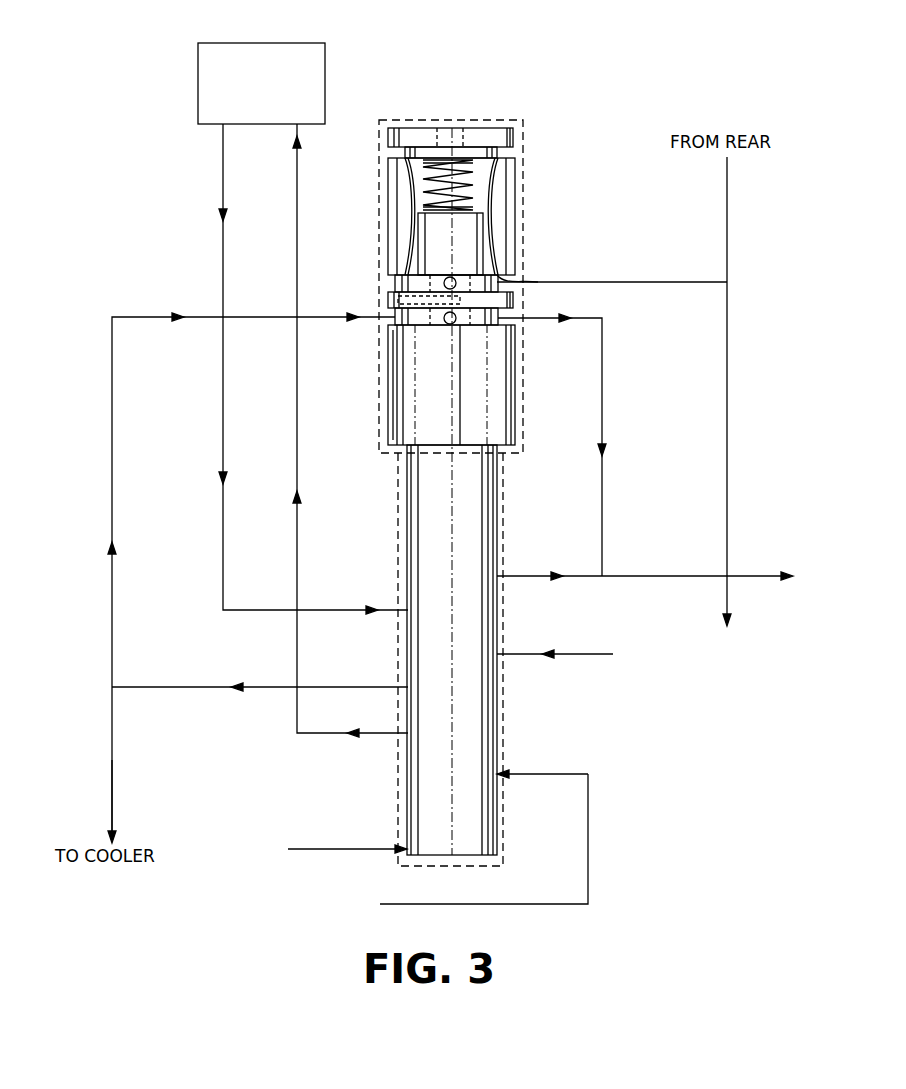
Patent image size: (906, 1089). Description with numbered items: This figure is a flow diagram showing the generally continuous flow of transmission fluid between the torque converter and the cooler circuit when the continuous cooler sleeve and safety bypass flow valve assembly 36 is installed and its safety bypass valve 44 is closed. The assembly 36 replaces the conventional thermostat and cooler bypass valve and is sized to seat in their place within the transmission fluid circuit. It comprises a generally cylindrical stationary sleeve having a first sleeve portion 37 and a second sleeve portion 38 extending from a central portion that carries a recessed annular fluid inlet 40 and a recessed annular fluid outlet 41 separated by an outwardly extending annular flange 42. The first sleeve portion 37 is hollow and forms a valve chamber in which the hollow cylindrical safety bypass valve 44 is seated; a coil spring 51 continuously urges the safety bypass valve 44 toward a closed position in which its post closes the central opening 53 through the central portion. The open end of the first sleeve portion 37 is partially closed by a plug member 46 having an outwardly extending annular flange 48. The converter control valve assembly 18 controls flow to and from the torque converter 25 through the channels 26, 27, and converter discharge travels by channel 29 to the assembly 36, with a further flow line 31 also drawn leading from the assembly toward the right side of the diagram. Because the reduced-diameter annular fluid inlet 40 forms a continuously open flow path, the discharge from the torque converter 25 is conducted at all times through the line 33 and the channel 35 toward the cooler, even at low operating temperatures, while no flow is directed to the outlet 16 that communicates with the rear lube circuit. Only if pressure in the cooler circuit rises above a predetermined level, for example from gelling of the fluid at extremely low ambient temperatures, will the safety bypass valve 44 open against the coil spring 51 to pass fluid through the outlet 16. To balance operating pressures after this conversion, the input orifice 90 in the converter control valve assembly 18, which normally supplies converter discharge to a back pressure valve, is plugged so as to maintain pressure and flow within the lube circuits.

The outlet 16 is at (537, 282).
The converter control valve assembly 18 is at (438, 620).
The torque converter 25 is at (198, 80).
The channel 26 is at (223, 418).
The channel 27 is at (297, 222).
The channel 29 is at (111, 583).
The branch line 31 is at (602, 395).
The line 33 is at (182, 687).
The channel or line 35 is at (111, 775).
The continuous cooler sleeve and safety bypass flow valve assembly 36 is at (415, 358).
The first sleeve portion 37 is at (515, 190).
The second sleeve portion 38 is at (410, 408).
The annular fluid inlet 40 is at (412, 318).
The annular fluid outlet 41 is at (519, 276).
The annular flange 42 is at (514, 299).
The safety bypass valve 44 is at (482, 235).
The plug member 46 is at (447, 108).
The annular flange 48 is at (507, 137).
The coil spring 51 is at (423, 172).
The central opening 53 is at (398, 304).
The input orifice 90 is at (497, 576).